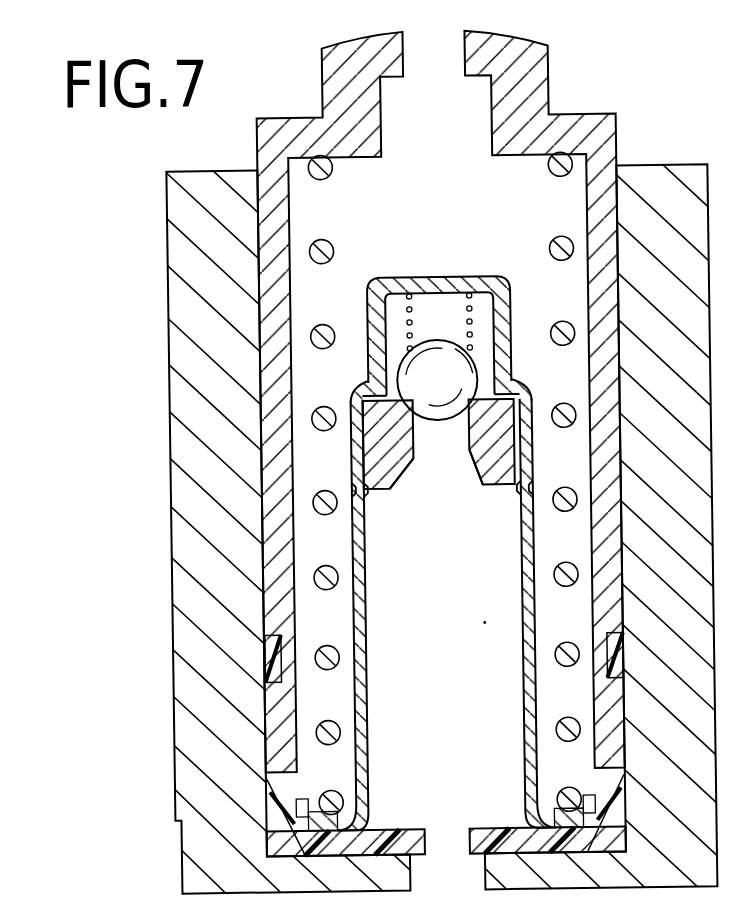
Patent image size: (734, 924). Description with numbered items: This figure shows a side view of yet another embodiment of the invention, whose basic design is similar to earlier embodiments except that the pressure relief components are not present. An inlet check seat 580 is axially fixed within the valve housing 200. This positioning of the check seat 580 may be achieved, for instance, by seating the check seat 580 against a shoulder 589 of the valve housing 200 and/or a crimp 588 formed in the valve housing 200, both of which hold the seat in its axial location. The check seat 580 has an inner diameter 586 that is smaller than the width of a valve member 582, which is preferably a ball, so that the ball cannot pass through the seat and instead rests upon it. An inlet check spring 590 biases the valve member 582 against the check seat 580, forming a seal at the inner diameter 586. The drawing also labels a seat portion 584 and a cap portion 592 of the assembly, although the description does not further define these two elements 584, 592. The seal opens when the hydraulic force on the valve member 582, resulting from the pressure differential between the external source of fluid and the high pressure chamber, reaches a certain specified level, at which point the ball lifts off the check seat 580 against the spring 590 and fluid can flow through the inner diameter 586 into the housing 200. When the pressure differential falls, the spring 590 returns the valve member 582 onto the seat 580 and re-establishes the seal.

The valve housing 200 is at (360, 714).
The inlet check seat 580 is at (508, 414).
The valve member 582 is at (400, 376).
The left valve seat 584 is at (378, 441).
The inner diameter 586 is at (470, 450).
The crimp 588 is at (355, 487).
The shoulder 589 is at (371, 385).
The inlet check spring 590 is at (410, 311).
The valve cap 592 is at (505, 339).